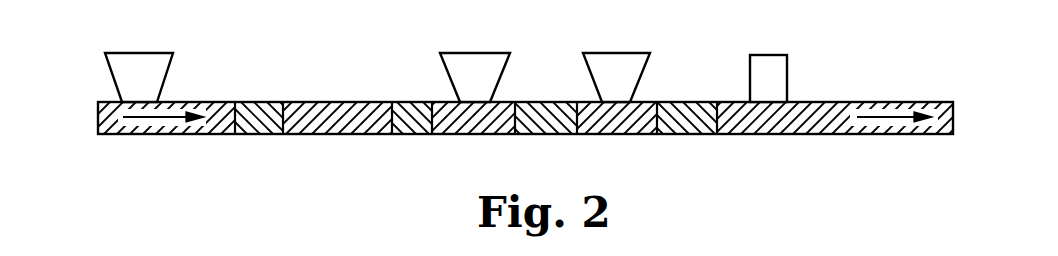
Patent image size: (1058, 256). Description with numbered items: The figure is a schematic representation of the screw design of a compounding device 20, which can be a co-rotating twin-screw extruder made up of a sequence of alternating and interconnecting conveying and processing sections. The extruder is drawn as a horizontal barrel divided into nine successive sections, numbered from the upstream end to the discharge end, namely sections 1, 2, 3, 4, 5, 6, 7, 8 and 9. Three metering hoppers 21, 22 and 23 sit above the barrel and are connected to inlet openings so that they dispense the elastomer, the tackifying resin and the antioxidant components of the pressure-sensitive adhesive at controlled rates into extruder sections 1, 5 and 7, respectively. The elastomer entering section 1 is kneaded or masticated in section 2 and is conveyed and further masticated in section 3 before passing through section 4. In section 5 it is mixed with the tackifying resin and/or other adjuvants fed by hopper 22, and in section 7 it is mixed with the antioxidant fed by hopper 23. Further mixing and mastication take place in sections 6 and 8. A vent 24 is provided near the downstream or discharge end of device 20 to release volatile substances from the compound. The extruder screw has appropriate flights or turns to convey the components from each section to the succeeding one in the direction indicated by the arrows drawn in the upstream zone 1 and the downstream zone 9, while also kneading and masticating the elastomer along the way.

The upstream extruder section 1 is at (215, 134).
The kneading section 2 is at (262, 128).
The conveying and mastication section 3 is at (350, 126).
The extruder section 4 is at (417, 128).
The resin mixing section 5 is at (487, 116).
The mixing and mastication section 6 is at (551, 126).
The antioxidant mixing section 7 is at (636, 117).
The mixing and mastication section 8 is at (688, 123).
The downstream zone 9 is at (821, 120).
The compounding device 20 is at (334, 97).
The metering hopper 21 is at (168, 72).
The metering hopper 22 is at (487, 73).
The metering hopper 23 is at (633, 72).
The vent 24 is at (775, 73).